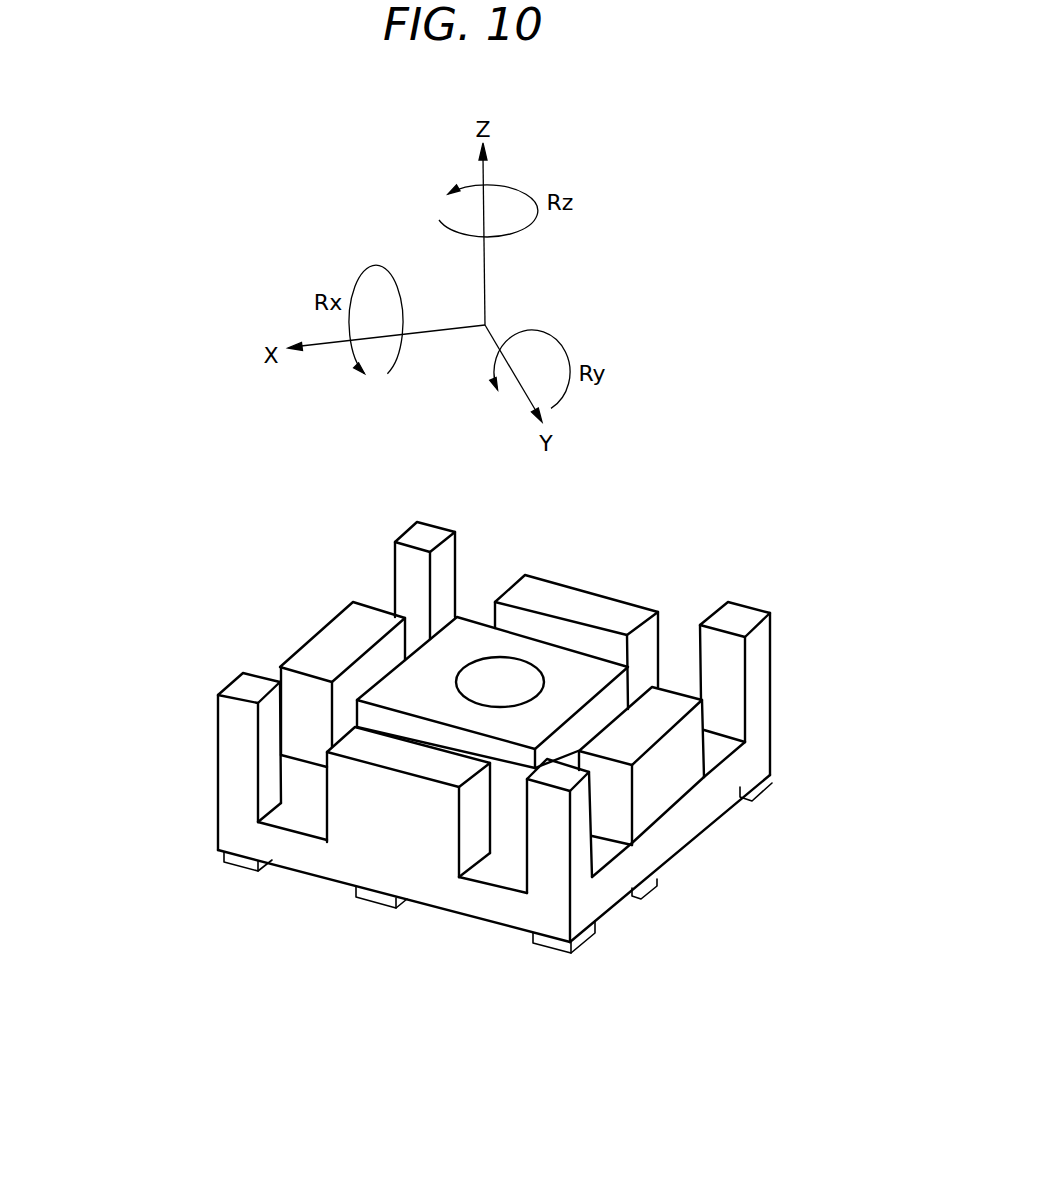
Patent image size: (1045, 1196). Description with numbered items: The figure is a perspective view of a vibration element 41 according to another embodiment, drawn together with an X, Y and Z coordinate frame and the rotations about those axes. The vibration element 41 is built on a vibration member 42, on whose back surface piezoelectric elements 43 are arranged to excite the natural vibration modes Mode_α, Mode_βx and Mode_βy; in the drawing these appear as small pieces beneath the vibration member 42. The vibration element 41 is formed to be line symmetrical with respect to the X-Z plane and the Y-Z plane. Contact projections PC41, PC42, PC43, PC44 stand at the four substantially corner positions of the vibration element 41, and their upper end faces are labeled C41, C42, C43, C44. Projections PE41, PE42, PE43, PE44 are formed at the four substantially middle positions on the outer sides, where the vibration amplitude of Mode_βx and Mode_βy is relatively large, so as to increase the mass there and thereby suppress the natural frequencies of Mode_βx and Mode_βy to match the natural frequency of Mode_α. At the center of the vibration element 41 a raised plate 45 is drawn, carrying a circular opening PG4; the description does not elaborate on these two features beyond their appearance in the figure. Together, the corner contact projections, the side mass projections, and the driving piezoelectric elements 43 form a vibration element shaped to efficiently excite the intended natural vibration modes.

The vibration element 41 is at (128, 505).
The vibration member 42 is at (765, 757).
The piezoelectric elements 43 is at (240, 862).
The center plate 45 is at (612, 760).
The hole PG4 is at (524, 688).
The contact surface C41 is at (233, 681).
The contact surface C42 is at (568, 778).
The contact surface C43 is at (743, 611).
The contact surface C44 is at (413, 528).
The contact projection PC41 is at (201, 725).
The contact projection PC42 is at (609, 898).
The contact projection PC43 is at (790, 660).
The contact projection PC44 is at (378, 559).
The projection PE41 is at (357, 853).
The projection PE42 is at (668, 772).
The projection PE43 is at (595, 604).
The projection PE44 is at (328, 633).